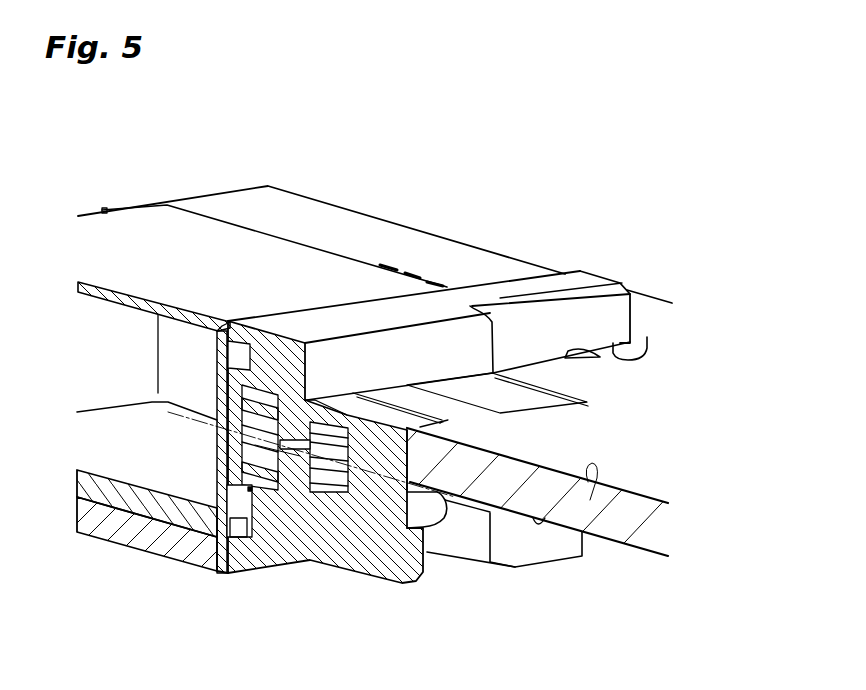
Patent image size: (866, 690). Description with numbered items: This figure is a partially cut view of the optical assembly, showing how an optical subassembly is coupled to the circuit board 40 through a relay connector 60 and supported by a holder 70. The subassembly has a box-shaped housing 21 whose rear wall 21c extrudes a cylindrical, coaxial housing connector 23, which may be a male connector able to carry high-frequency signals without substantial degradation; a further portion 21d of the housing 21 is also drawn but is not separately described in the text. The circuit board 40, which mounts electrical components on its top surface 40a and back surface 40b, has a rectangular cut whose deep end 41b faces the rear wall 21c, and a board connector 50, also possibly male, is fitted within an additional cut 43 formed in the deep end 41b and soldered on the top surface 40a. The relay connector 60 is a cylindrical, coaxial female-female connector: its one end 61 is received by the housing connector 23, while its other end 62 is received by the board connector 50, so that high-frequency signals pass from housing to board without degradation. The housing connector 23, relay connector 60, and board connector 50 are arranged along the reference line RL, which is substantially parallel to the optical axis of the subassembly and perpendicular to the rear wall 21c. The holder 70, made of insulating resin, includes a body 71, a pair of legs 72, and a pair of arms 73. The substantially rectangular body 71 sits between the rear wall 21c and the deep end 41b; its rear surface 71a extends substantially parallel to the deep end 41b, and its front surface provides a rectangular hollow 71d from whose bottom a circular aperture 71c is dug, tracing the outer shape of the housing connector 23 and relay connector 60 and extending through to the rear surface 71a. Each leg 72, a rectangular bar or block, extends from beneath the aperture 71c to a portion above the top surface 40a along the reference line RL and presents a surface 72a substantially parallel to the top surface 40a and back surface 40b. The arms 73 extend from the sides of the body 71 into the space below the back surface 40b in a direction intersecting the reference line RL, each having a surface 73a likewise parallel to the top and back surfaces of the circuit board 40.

The housing 21 is at (255, 248).
The rear wall 21c is at (237, 505).
The side wall of housing 21d is at (132, 271).
The housing connector 23 is at (278, 517).
The circuit board 40 is at (621, 527).
The top surface 40a is at (545, 517).
The back surface 40b is at (590, 500).
The deep end 41b is at (548, 360).
The additional cut 43 is at (433, 513).
The board connector 50 is at (423, 528).
The relay connector 60 is at (325, 525).
The one end 61 is at (262, 385).
The other end 62 is at (330, 400).
The holder 70 is at (490, 338).
The body 71 is at (417, 347).
The rear surface 71a is at (420, 345).
The aperture 71c is at (265, 393).
The rectangular hollow 71d is at (240, 520).
The leg 72 is at (343, 560).
The surface 72a is at (350, 533).
The arm 73 is at (548, 283).
The surface 73a is at (648, 337).
The reference line RL is at (457, 500).